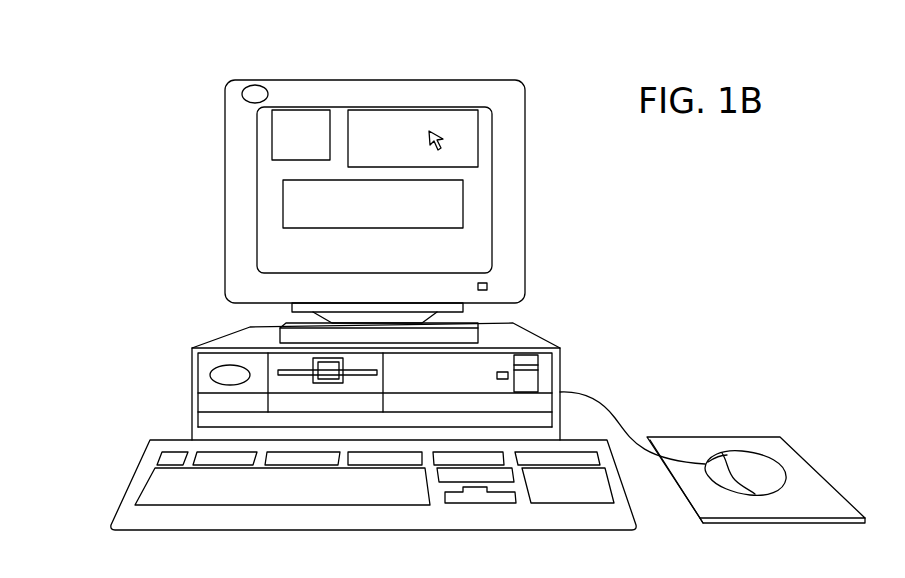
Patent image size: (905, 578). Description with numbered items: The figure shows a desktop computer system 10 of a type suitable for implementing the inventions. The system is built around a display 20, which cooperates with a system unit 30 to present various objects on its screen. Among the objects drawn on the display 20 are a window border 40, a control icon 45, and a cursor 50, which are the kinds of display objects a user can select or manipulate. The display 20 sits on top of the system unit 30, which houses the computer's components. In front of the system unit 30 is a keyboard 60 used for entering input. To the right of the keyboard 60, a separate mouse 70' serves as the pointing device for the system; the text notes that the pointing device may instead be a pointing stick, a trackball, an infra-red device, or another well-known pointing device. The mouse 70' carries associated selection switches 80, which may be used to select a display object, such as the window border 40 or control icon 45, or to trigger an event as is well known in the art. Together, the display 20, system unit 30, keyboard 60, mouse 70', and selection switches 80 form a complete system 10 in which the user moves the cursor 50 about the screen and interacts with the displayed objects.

The computer system 10 is at (134, 207).
The display 20 is at (256, 94).
The system unit 30 is at (227, 335).
The window border 40 is at (366, 200).
The control icon 45 is at (300, 127).
The cursor 50 is at (443, 138).
The keyboard 60 is at (163, 487).
The mouse 70' is at (756, 445).
The selection switches 80 is at (732, 455).